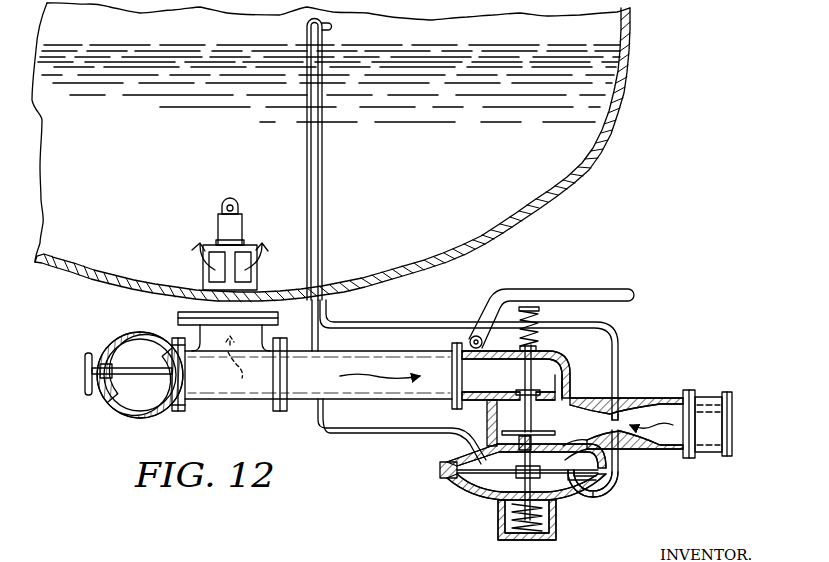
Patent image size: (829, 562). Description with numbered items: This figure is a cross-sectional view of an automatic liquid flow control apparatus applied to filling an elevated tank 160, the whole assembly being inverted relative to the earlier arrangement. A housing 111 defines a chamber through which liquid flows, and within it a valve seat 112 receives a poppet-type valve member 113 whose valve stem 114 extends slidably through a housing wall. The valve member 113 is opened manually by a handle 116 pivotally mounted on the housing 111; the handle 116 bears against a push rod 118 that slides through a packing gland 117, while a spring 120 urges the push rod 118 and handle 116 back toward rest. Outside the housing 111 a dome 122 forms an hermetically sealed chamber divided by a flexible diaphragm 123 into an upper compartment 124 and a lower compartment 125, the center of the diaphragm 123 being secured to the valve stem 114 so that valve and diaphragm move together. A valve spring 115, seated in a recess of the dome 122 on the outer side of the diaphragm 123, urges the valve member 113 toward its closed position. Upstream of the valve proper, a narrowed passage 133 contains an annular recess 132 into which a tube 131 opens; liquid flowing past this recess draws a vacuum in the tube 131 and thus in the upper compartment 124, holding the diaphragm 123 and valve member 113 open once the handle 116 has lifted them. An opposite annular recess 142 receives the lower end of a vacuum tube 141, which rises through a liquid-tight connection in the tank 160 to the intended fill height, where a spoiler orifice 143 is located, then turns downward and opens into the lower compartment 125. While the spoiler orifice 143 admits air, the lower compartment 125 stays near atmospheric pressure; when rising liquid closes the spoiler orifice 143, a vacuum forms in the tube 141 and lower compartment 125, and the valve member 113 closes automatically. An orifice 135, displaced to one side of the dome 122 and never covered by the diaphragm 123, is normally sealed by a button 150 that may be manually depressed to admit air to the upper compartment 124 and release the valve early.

The elevated tank 160 is at (405, 268).
The vacuum tube 141 is at (307, 160).
The spoiler orifice 143 is at (332, 26).
The push rod 118 is at (464, 376).
The housing 111 is at (563, 378).
The valve seat 112 is at (532, 400).
The packing gland 117 is at (545, 362).
The spring 120 is at (546, 318).
The handle 116 is at (640, 286).
The narrowed passage 133 is at (613, 408).
The annular recess 132 is at (616, 447).
The annular recess 142 is at (620, 414).
The tube 131 is at (620, 484).
The button 150 is at (596, 500).
The lower compartment 125 is at (462, 466).
The upper compartment 124 is at (470, 492).
The valve stem 114 is at (500, 484).
The flexible diaphragm 123 is at (512, 477).
The valve member 113 is at (555, 432).
The dome 122 is at (500, 535).
The valve spring 115 is at (550, 532).
The orifice 135 is at (582, 480).